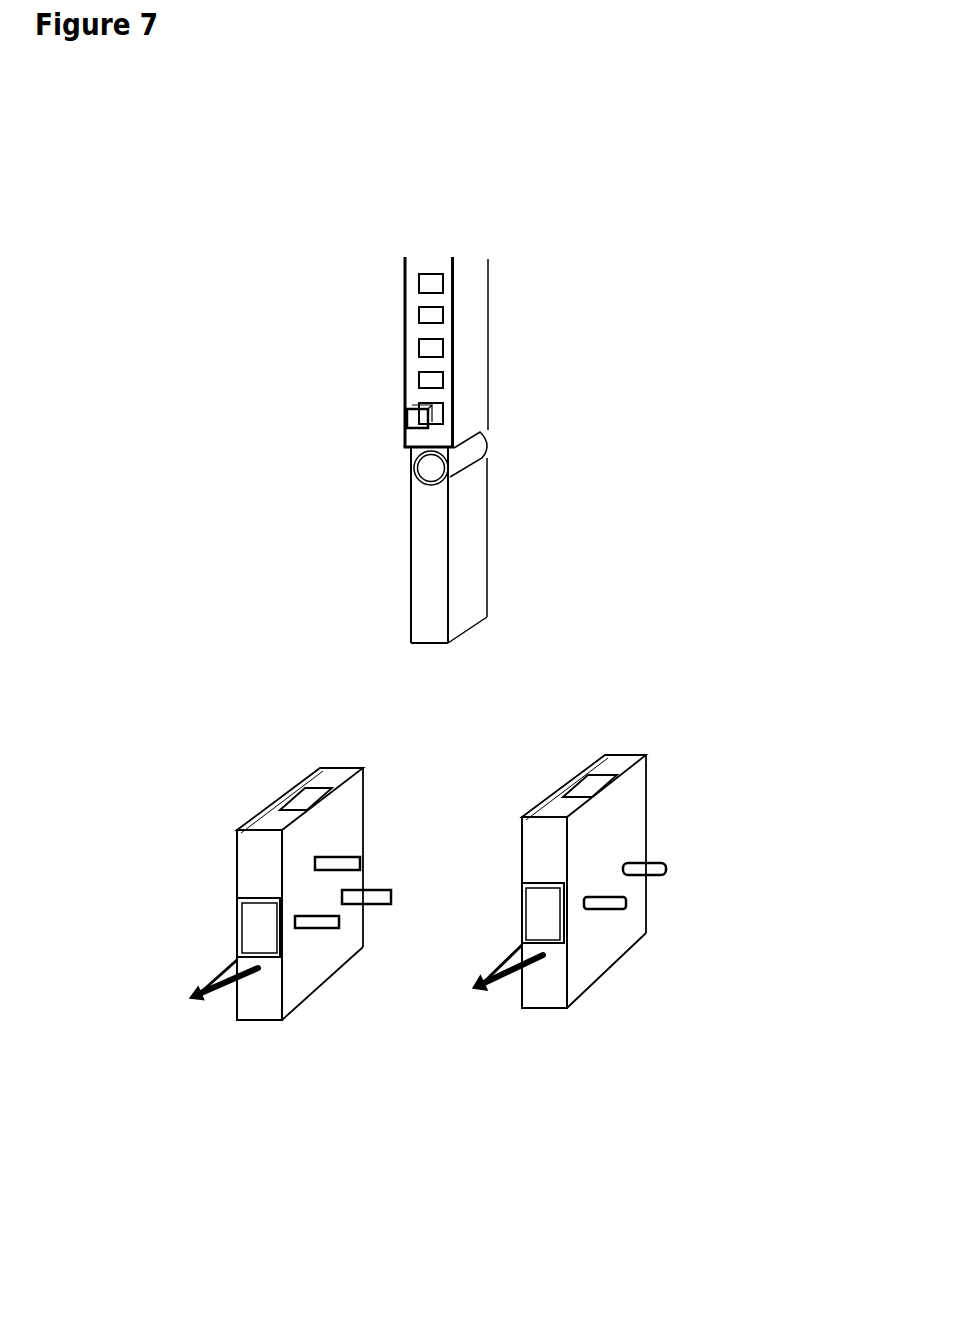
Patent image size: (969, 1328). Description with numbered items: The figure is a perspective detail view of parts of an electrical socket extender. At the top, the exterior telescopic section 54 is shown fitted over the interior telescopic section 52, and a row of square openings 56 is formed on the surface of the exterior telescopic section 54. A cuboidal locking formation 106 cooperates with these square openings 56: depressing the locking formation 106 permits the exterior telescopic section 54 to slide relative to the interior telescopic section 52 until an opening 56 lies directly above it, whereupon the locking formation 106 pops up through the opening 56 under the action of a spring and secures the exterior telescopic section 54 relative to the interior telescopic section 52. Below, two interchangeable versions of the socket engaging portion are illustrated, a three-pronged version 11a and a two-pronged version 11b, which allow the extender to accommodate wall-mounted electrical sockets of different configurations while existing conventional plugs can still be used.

The exterior telescopic section 54 is at (459, 339).
The square openings 56 is at (417, 378).
The cuboidal locking formation 106 is at (425, 415).
The interior telescopic section 52 is at (455, 557).
The three-pronged version of socket engaging portion 11a is at (219, 1076).
The two-pronged version of socket engaging portion 11b is at (639, 1052).